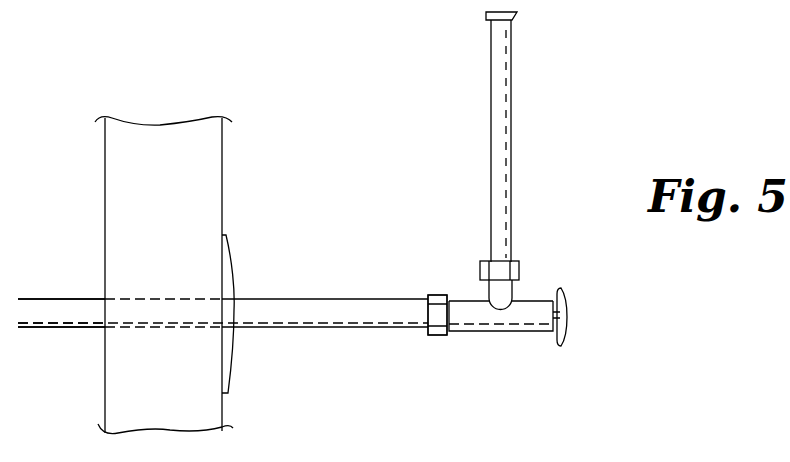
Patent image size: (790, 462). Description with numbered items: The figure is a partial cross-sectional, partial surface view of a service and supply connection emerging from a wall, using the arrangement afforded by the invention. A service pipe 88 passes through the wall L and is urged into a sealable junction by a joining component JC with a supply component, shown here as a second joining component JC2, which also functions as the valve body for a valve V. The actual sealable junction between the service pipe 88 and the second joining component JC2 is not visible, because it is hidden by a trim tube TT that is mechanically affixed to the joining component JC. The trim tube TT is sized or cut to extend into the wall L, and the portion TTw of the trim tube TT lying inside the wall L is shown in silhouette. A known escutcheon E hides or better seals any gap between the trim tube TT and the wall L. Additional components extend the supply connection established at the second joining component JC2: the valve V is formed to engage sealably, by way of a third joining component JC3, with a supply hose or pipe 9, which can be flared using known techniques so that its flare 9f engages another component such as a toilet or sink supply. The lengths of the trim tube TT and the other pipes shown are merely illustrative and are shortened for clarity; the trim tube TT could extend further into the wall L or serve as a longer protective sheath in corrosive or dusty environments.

The wall L is at (164, 275).
The trim tube TT is at (361, 303).
The portion of trim tube inside wall TTw is at (184, 330).
The service pipe 88 is at (68, 308).
The escutcheon E is at (228, 277).
The joining component JC is at (429, 343).
The second joining component JC2 is at (448, 314).
The third joining component JC3 is at (470, 273).
The valve V is at (523, 344).
The supply hose or pipe 9 is at (504, 115).
The flare 9f is at (489, 16).